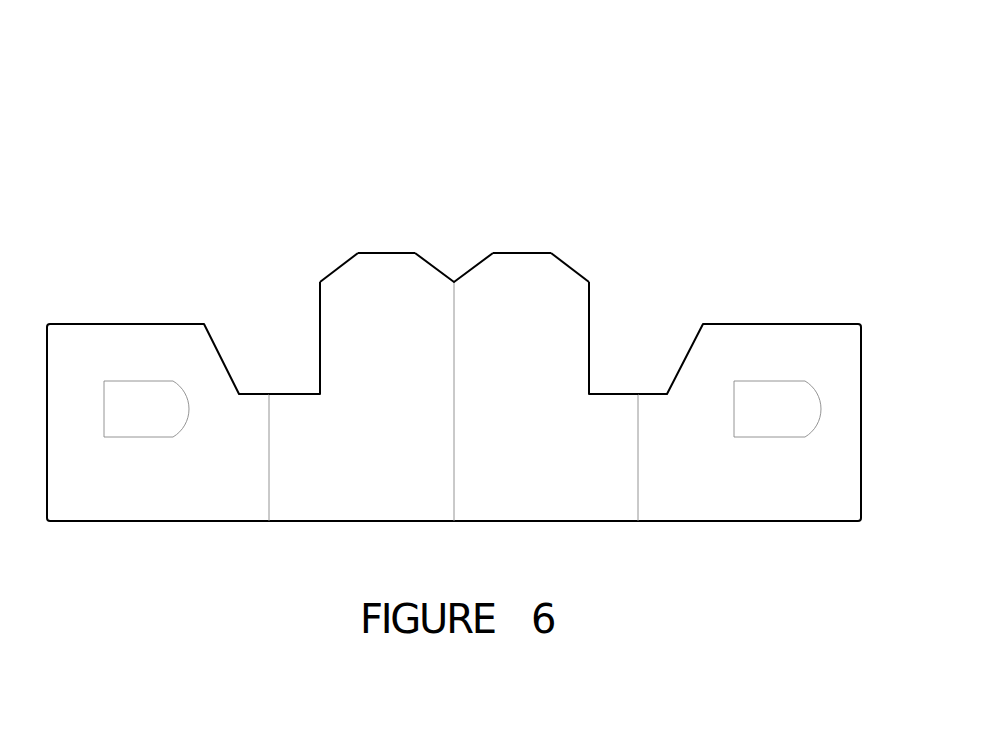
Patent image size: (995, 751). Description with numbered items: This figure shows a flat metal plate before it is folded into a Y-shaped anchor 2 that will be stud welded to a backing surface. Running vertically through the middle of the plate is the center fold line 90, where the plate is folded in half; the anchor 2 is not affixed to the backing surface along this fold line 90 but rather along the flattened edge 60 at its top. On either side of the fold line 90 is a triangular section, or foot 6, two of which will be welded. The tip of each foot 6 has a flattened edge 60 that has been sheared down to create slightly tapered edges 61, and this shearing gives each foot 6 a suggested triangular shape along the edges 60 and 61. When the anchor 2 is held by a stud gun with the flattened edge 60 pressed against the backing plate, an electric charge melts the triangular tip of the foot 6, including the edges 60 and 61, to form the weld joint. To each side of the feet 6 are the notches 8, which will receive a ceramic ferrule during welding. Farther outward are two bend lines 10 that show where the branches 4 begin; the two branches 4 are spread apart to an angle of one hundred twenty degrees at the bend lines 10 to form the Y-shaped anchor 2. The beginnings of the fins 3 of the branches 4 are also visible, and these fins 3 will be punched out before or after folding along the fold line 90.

The Y-shaped anchor 2 is at (490, 153).
The fins 3 is at (158, 405).
The branches 4 is at (93, 523).
The foot 6 is at (465, 209).
The notches 8 is at (307, 380).
The bend lines 10 is at (270, 497).
The flattened edge 60 is at (387, 253).
The tapered edges 61 is at (337, 262).
The center fold line 90 is at (454, 497).